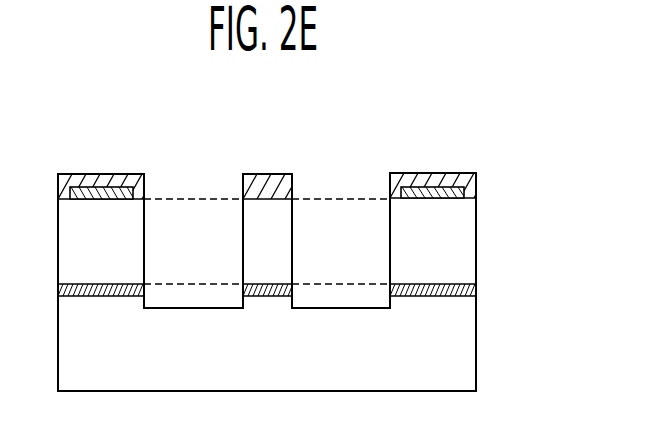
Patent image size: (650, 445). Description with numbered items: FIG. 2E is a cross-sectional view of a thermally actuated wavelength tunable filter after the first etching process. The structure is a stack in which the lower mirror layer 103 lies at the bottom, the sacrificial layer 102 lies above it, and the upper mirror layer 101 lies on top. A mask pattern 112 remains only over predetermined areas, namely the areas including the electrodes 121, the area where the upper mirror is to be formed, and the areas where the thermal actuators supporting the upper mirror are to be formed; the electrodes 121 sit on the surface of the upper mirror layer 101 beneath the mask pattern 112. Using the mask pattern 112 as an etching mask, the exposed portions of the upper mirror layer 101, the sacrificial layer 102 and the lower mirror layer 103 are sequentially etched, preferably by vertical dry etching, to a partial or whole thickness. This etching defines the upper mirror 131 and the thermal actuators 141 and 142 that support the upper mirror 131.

The upper mirror layer 101 is at (464, 242).
The sacrificial layer 102 is at (466, 290).
The lower mirror layer 103 is at (463, 346).
The mask pattern 112 is at (476, 176).
The electrodes 121 is at (476, 198).
The upper mirror 131 is at (268, 211).
The thermal actuator 141 is at (194, 211).
The thermal actuator 142 is at (342, 211).